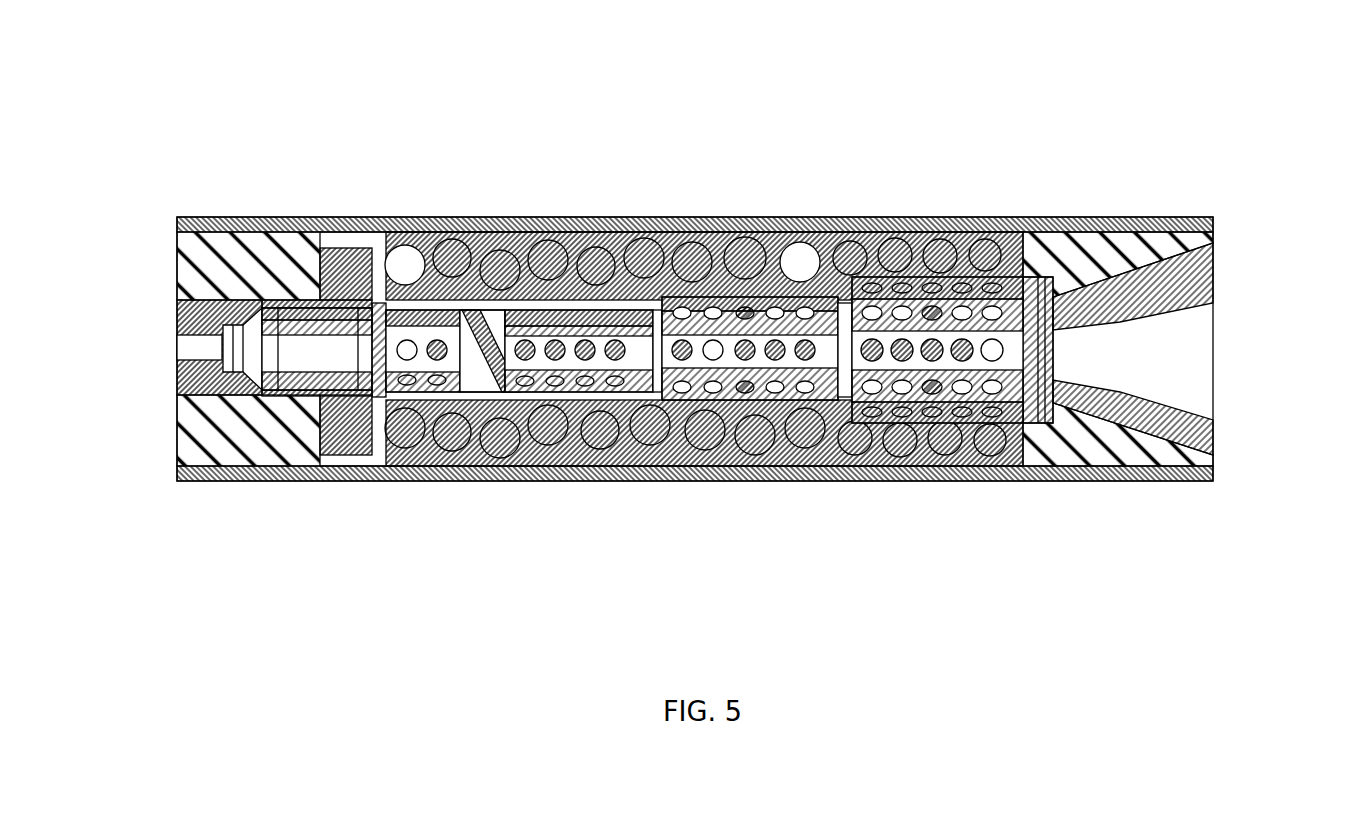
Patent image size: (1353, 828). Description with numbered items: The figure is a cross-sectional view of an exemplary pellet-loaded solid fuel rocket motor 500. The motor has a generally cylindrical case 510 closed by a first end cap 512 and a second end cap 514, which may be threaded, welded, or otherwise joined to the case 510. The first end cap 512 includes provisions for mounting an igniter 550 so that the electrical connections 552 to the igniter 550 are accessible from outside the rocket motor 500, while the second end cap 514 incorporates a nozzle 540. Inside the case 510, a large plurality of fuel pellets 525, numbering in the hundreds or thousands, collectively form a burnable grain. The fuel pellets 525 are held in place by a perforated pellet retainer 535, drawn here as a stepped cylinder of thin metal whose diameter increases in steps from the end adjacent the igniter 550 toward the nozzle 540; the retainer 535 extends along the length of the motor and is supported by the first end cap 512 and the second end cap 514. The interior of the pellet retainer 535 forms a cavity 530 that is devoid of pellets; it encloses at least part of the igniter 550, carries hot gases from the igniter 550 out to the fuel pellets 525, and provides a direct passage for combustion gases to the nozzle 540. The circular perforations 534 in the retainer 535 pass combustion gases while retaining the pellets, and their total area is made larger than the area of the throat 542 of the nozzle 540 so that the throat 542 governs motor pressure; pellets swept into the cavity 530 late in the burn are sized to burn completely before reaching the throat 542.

The pellet-loaded solid fuel rocket motor 500 is at (376, 98).
The case 510 is at (650, 217).
The first end cap 512 is at (178, 455).
The second end cap 514 is at (1213, 232).
The fuel pellets 525 is at (752, 262).
The cavity 530 is at (704, 365).
The perforations 534 is at (433, 357).
The perforated pellet retainer 535 is at (855, 415).
The nozzle 540 is at (1163, 440).
The throat 542 is at (1048, 405).
The igniter 550 is at (322, 325).
The electrical connections 552 is at (185, 362).